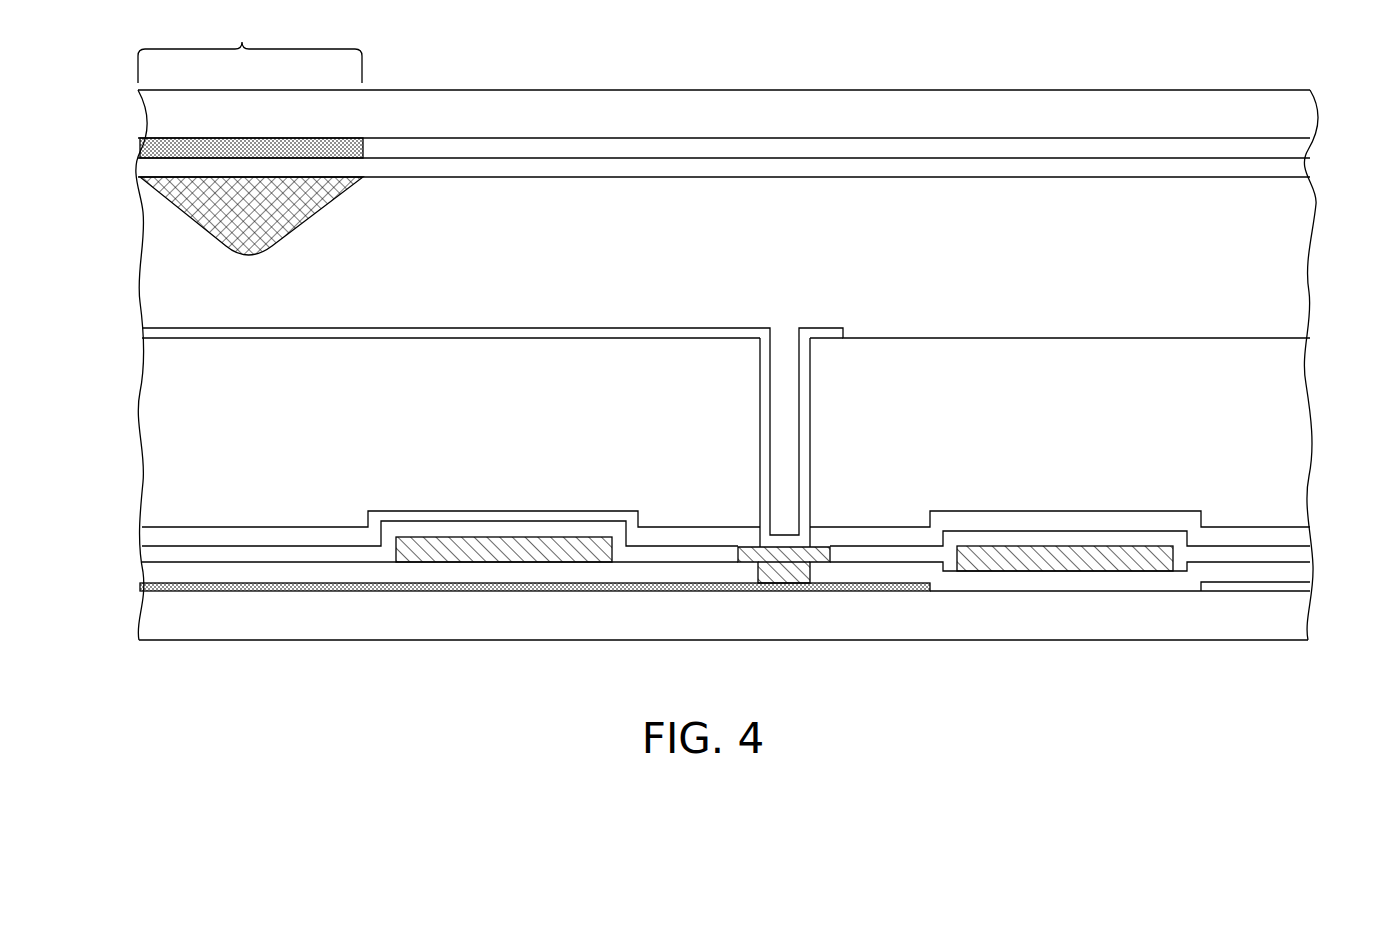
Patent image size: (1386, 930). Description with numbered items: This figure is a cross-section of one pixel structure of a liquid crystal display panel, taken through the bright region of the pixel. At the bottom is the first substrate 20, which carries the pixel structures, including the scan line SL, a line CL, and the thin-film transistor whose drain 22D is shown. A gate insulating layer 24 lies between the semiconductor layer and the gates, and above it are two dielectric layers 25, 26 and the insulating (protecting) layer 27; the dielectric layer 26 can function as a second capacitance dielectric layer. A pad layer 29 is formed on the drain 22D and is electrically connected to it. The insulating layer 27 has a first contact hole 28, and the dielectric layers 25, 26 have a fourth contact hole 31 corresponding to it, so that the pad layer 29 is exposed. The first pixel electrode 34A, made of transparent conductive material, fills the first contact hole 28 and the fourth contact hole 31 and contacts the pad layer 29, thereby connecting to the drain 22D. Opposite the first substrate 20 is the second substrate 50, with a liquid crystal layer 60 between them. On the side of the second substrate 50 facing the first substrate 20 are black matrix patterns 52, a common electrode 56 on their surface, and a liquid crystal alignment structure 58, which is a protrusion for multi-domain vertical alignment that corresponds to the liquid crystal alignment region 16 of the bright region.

The liquid crystal alignment region 16 is at (242, 42).
The second substrate 50 is at (762, 124).
The black matrix pattern 52 is at (152, 145).
The common electrode 56 is at (152, 166).
The liquid crystal alignment structure 58 is at (198, 216).
The liquid crystal layer 60 is at (1047, 263).
The first pixel electrode 34A is at (380, 332).
The first contact hole 28 is at (787, 329).
The insulating layer 27 is at (496, 437).
The fourth contact hole 31 is at (818, 526).
The dielectric layer 26 is at (1289, 538).
The dielectric layer 25 is at (1289, 553).
The gate insulating layer 24 is at (302, 570).
The common line CL is at (498, 549).
The drain 22D is at (587, 583).
The pad layer 29 is at (790, 573).
The scan line SL is at (1060, 568).
The first substrate 20 is at (711, 626).